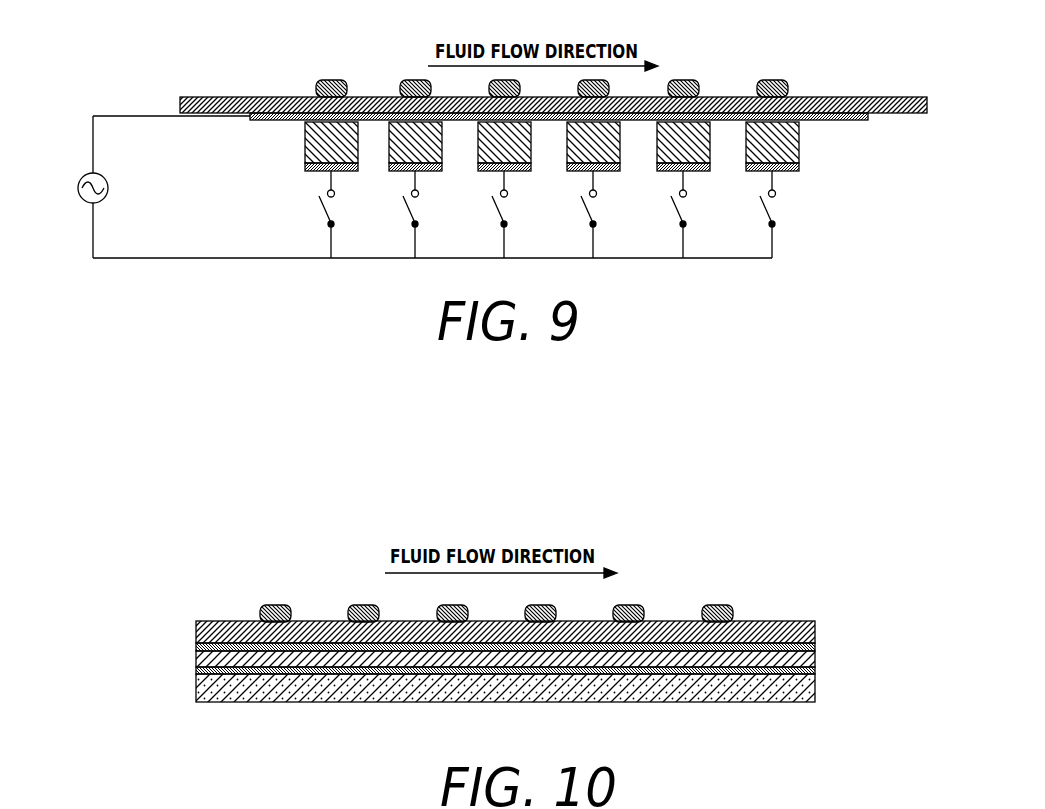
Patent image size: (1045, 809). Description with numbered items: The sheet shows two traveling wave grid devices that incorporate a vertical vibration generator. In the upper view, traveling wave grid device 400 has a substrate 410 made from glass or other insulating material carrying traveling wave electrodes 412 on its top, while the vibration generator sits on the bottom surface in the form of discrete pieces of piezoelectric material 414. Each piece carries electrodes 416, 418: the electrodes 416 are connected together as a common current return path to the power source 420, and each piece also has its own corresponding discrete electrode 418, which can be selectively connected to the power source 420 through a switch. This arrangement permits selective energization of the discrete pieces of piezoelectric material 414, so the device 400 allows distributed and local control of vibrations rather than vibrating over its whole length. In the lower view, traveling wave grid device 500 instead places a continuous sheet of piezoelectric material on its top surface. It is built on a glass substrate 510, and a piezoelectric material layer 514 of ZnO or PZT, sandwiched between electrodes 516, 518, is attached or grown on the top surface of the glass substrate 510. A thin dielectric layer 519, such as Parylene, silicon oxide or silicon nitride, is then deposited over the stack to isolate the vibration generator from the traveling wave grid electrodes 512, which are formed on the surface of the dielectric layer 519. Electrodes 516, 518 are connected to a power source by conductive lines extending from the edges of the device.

In FIG. 9, the traveling wave grid device 400 is at (730, 29).
In FIG. 9, the substrate 410 is at (907, 96).
In FIG. 9, the traveling wave electrodes 412 is at (333, 80).
In FIG. 9, the discrete pieces of piezoelectric material 414 is at (305, 133).
In FIG. 9, the electrodes 416 is at (852, 120).
In FIG. 9, the discrete electrode 418 is at (313, 173).
In FIG. 9, the power source 420 is at (109, 185).
In FIG. 10, the traveling wave grid device 500 is at (677, 537).
In FIG. 10, the glass substrate 510 is at (790, 703).
In FIG. 10, the electrodes 512 is at (354, 605).
In FIG. 10, the piezoelectric material layer 514 is at (815, 659).
In FIG. 10, the electrode 516 is at (815, 647).
In FIG. 10, the electrode 518 is at (815, 671).
In FIG. 10, the thin dielectric layer 519 is at (742, 625).